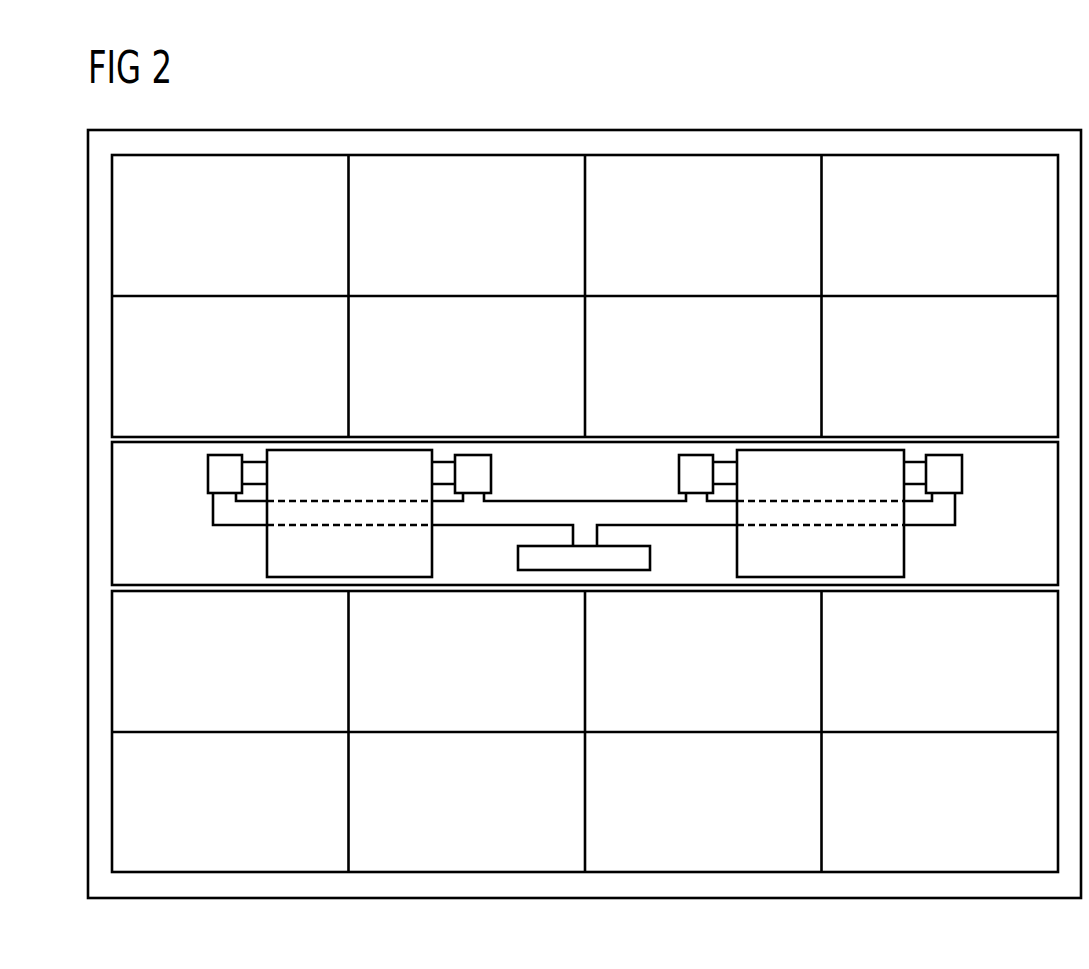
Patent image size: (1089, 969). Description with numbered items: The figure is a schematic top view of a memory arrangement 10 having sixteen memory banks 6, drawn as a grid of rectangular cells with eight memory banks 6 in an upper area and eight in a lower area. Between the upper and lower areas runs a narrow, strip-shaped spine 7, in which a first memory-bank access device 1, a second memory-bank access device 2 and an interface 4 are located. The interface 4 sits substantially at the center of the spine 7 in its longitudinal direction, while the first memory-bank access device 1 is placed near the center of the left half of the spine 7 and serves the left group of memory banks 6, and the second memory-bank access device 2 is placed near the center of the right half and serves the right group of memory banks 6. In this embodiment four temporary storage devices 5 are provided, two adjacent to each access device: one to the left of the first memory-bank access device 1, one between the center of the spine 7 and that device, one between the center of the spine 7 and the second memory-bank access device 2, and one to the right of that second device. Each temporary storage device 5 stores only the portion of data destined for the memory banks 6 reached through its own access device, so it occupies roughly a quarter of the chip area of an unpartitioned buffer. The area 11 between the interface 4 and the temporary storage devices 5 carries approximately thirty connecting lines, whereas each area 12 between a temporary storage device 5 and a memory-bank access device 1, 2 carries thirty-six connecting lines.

The memory arrangement 10 is at (570, 129).
The memory bank 6 is at (238, 239).
The spine 7 is at (1036, 535).
The first memory-bank access device 1 is at (276, 553).
The second memory-bank access device 2 is at (895, 553).
The temporary storage device 5 is at (218, 472).
The area with connecting lines 12 is at (253, 468).
The area with connecting lines 11 is at (583, 512).
The interface 4 is at (650, 555).